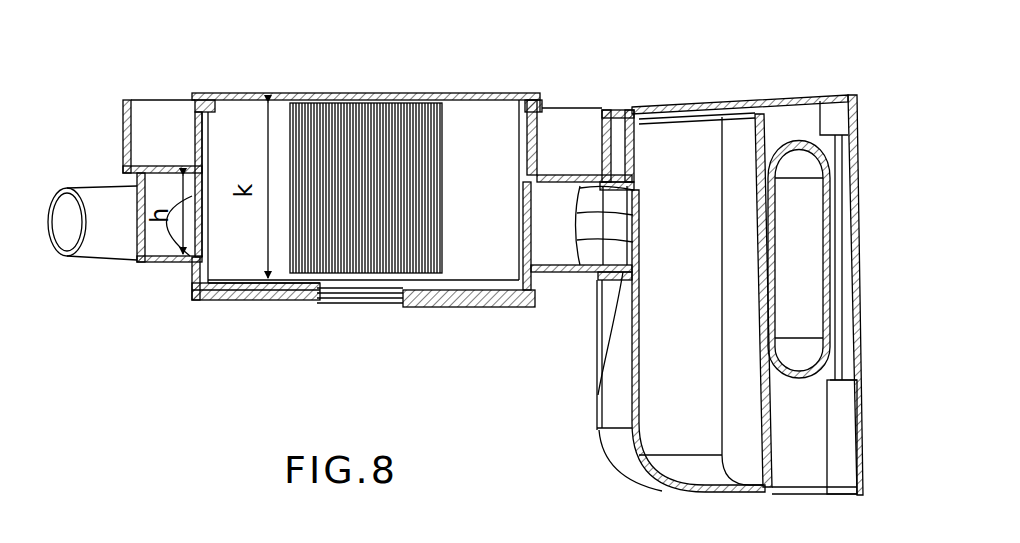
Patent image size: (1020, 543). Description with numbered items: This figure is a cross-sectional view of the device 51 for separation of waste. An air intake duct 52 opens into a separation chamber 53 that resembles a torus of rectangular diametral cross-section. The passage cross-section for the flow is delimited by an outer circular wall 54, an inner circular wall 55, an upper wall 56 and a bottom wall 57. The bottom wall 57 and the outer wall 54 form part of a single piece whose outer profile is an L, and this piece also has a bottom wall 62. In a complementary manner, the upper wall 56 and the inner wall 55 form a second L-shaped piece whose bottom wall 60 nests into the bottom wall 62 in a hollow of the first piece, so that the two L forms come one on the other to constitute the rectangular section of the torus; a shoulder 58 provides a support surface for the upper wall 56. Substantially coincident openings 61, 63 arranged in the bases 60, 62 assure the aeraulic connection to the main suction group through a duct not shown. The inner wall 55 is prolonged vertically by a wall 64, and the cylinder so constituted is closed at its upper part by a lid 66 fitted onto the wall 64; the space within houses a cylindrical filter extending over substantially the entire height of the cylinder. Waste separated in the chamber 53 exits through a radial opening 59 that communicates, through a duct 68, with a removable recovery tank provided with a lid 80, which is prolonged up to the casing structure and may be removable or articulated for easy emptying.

The device for separation of waste 51 is at (224, 306).
The air intake duct 52 is at (88, 208).
The separation chamber 53 is at (150, 243).
The outer circular wall 54 is at (137, 217).
The inner circular wall 55 is at (197, 185).
The upper wall 56 is at (151, 170).
The bottom wall 57 is at (567, 272).
The shoulder 58 is at (126, 172).
The radial opening 59 is at (573, 224).
The bottom wall 60 is at (318, 293).
The opening 61 is at (388, 297).
The bottom wall 62 is at (308, 294).
The opening 63 is at (365, 304).
The wall 64 is at (540, 137).
The lid 66 is at (352, 100).
The duct 68 is at (598, 395).
The lid 80 is at (712, 100).